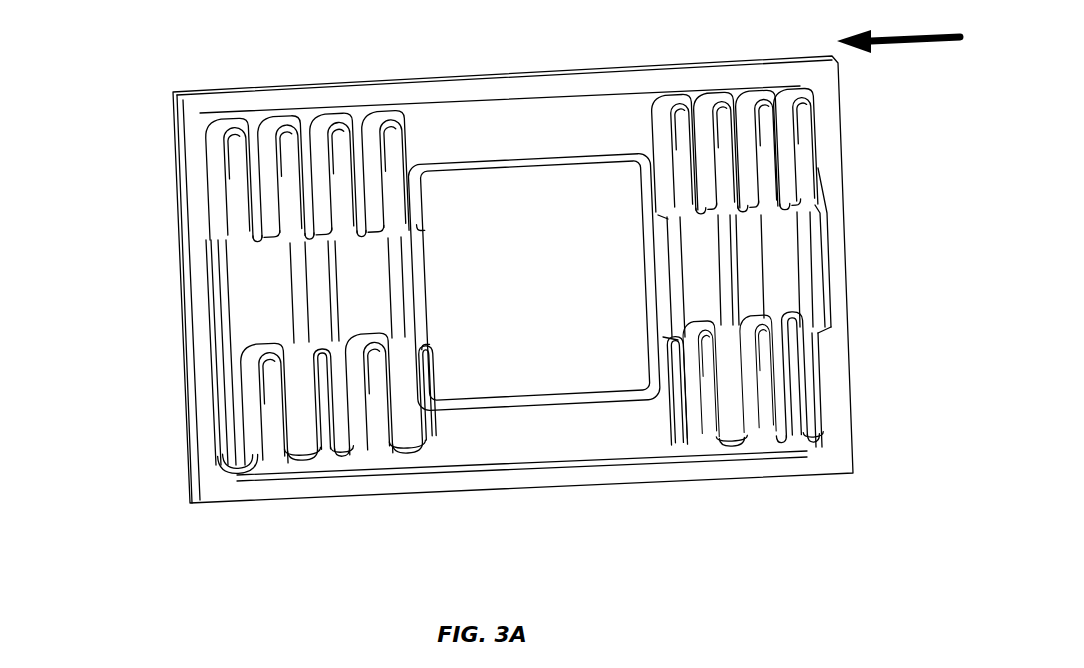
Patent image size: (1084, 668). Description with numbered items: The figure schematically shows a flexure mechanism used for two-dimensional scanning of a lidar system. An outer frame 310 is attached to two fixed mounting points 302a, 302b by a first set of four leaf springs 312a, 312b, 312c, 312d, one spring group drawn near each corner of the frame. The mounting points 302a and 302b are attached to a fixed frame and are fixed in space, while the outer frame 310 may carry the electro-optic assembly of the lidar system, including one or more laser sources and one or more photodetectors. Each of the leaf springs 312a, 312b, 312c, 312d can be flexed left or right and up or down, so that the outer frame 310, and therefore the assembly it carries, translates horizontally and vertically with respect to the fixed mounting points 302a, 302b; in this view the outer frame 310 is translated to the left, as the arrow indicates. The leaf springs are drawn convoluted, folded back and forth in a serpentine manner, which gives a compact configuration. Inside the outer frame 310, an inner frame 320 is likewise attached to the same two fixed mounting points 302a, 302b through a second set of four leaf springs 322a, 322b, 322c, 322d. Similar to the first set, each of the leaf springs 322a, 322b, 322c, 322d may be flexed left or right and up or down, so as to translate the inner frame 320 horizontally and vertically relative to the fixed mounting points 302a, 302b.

The outer frame 310 is at (430, 78).
The inner frame 320 is at (582, 156).
The fixed mounting point 302a is at (313, 273).
The fixed mounting point 302b is at (752, 270).
The leaf spring 312a is at (803, 85).
The leaf spring 312b is at (806, 450).
The leaf spring 312c is at (252, 465).
The leaf spring 312d is at (238, 158).
The leaf spring 322a is at (692, 117).
The leaf spring 322b is at (724, 445).
The leaf spring 322c is at (363, 433).
The leaf spring 322d is at (352, 140).